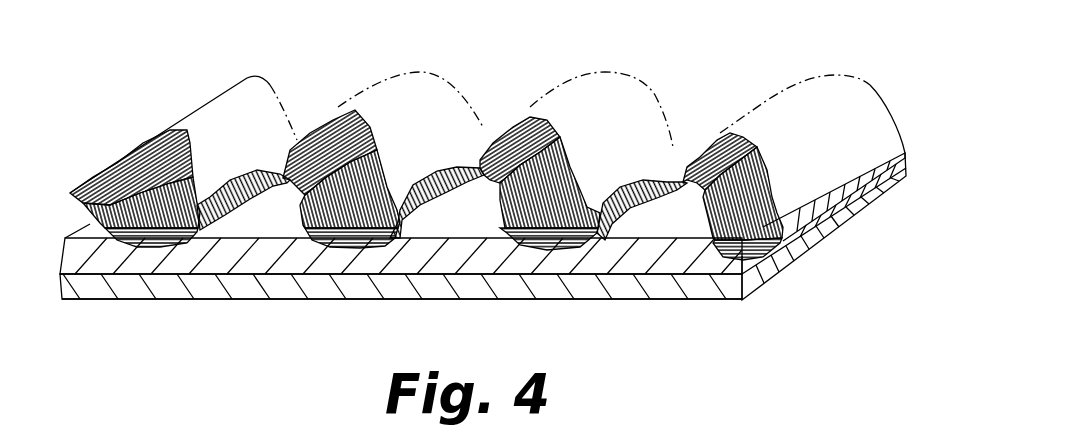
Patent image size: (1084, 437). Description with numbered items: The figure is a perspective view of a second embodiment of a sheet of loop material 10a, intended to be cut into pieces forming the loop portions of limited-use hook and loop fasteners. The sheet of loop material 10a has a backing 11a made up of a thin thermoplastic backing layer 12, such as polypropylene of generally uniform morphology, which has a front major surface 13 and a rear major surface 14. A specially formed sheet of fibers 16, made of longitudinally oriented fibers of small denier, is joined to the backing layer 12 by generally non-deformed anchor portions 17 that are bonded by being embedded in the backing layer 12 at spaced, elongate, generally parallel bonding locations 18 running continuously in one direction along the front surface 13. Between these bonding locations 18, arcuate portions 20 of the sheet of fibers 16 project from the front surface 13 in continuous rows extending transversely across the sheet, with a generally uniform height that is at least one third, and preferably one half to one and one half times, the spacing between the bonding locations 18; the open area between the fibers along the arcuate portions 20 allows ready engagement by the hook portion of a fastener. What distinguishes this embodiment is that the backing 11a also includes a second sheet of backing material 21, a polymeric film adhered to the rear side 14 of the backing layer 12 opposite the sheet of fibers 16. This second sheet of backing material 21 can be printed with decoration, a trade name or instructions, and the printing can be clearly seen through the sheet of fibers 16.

The sheet of loop material 10a is at (847, 170).
The backing 11a is at (753, 267).
The thermoplastic backing layer 12 is at (163, 263).
The front major surface 13 is at (250, 226).
The rear major surface 14 is at (537, 277).
The sheet of fibers 16 is at (506, 191).
The anchor portions 17 is at (352, 230).
The bonding locations 18 is at (352, 205).
The arcuate portions 20 is at (494, 135).
The second sheet of backing material 21 is at (617, 297).